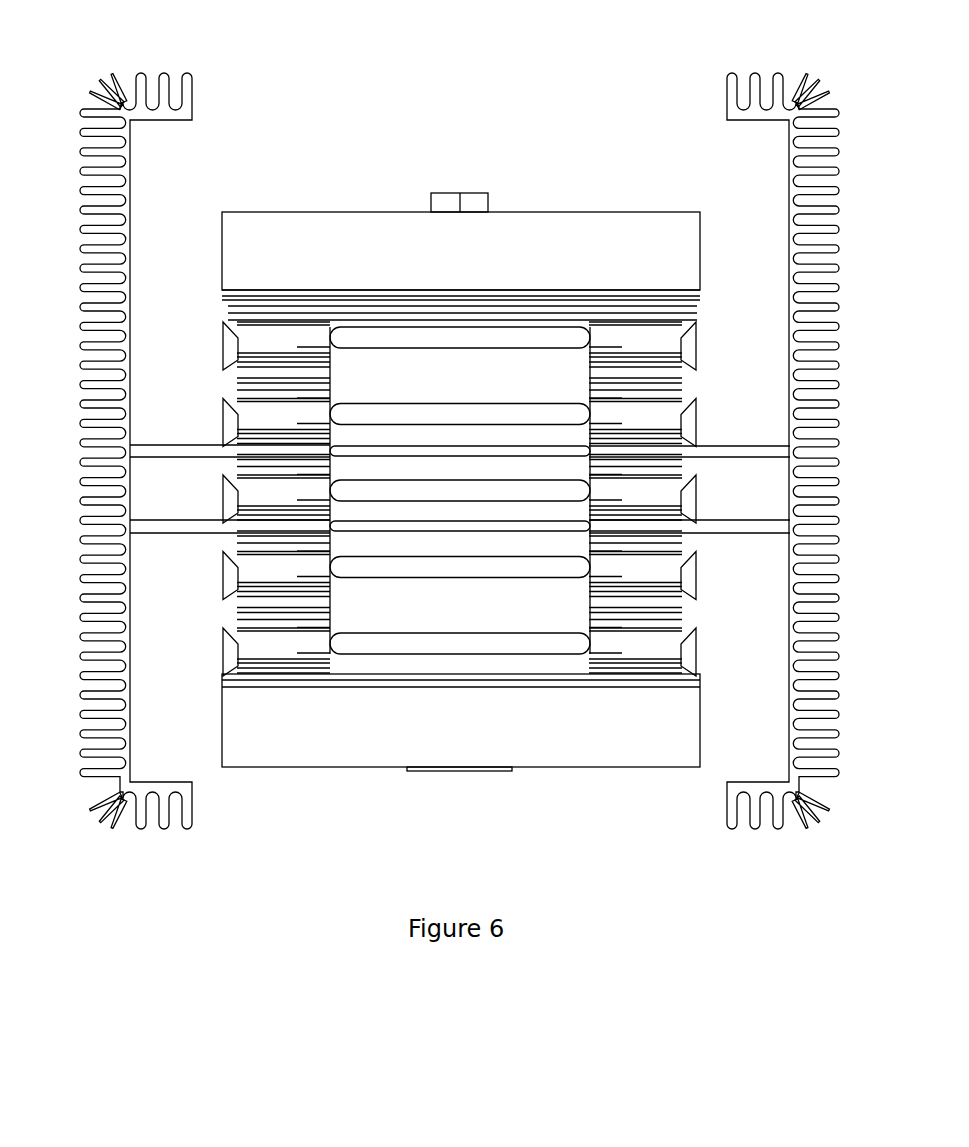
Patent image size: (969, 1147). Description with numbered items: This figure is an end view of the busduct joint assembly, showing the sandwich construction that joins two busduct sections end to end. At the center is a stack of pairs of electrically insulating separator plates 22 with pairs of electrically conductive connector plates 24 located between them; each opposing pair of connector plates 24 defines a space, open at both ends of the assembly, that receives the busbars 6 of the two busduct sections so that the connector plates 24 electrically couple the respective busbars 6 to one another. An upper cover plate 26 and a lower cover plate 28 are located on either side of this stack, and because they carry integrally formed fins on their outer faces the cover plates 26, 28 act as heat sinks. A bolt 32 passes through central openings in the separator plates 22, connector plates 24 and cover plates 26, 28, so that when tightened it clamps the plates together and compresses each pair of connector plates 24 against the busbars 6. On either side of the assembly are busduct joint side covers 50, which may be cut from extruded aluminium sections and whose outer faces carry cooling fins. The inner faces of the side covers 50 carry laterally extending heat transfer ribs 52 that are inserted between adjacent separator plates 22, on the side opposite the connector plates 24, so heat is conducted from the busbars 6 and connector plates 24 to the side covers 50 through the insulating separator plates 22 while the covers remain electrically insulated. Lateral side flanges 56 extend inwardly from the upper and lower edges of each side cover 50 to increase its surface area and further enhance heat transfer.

The busbars 6 is at (545, 645).
The separator plates 22 is at (232, 325).
The connector plates 24 is at (302, 327).
The upper cover plate 26 is at (318, 232).
The lower cover plate 28 is at (395, 735).
The bolt 32 is at (468, 202).
The busduct joint side covers 50 is at (84, 262).
The heat transfer ribs 52 is at (750, 446).
The lateral side flanges 56 is at (165, 90).